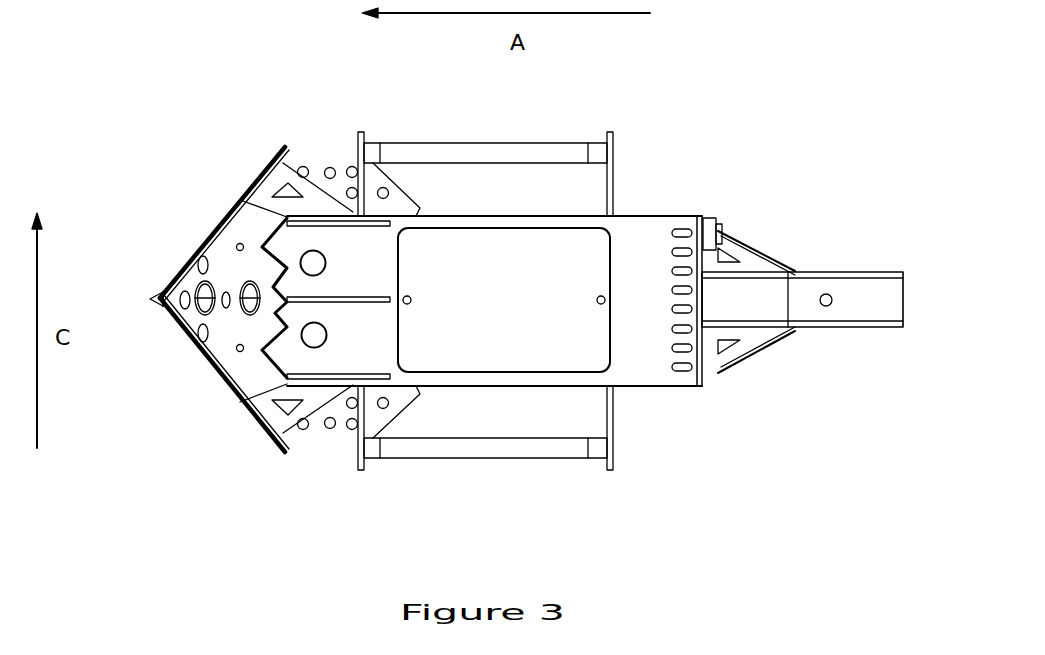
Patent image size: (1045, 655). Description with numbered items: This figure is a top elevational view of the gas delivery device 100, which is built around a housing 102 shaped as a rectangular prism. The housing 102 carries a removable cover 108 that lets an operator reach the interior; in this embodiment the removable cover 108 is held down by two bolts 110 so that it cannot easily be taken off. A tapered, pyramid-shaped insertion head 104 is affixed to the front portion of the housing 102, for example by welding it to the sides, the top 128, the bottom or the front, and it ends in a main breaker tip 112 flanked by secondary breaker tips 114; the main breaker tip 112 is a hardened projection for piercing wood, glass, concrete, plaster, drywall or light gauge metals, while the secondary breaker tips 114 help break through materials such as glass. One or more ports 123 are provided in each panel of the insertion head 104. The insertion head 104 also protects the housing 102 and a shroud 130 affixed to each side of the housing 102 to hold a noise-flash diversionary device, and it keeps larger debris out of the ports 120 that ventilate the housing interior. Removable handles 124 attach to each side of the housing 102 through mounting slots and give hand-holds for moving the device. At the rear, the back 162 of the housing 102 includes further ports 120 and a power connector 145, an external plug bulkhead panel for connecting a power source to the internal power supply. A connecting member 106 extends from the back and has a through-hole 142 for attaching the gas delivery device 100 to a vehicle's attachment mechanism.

The gas delivery device 100 is at (120, 114).
The housing 102 is at (685, 402).
The insertion head 104 is at (176, 256).
The connecting member 106 is at (862, 258).
The removable cover 108 is at (600, 353).
The bolts 110 is at (601, 296).
The main breaker tip 112 is at (157, 292).
The secondary breaker tips 114 is at (240, 243).
The ports 120 is at (313, 250).
The ports 123 is at (250, 316).
The handles 124 is at (486, 132).
The top 128 is at (655, 230).
The shroud 130 is at (357, 160).
The through-hole 142 is at (824, 307).
The power connector 145 is at (724, 232).
The back 162 is at (733, 365).